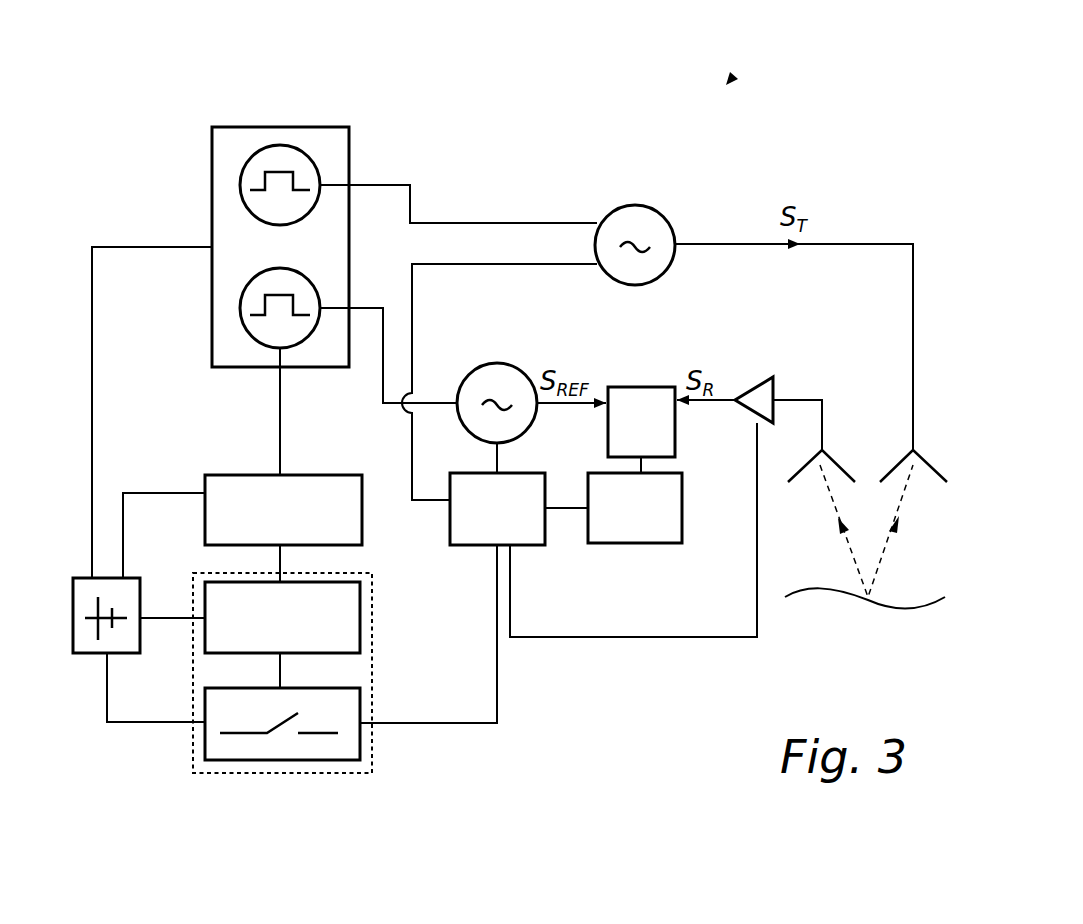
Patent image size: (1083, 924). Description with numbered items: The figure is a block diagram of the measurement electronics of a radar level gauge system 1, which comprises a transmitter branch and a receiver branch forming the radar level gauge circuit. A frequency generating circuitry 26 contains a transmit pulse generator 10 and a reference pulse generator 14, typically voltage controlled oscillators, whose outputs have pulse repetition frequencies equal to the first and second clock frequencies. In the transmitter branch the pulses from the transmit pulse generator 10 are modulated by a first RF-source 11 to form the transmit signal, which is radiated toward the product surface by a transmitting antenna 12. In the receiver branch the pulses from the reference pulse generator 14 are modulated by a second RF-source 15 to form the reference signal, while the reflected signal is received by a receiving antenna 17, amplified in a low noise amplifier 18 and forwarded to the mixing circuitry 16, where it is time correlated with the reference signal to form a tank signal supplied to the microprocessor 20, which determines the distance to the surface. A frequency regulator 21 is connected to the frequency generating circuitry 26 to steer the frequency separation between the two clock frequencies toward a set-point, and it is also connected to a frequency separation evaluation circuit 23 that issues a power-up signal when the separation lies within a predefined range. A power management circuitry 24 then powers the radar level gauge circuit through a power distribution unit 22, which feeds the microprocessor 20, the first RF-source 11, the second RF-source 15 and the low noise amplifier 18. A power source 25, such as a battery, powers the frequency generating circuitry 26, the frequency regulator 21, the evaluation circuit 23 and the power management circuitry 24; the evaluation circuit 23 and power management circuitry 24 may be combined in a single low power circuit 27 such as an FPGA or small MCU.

The level gauge system 1 is at (730, 80).
The transmit pulse generator 10 is at (278, 145).
The first RF-source 11 is at (637, 206).
The transmitting antenna 12 is at (918, 453).
The reference pulse generator 14 is at (270, 350).
The second RF-source 15 is at (500, 364).
The mixing circuitry 16 is at (638, 387).
The receiving antenna 17 is at (827, 453).
The low noise amplifier 18 is at (768, 380).
The microprocessor 20 is at (682, 530).
The frequency regulator 21 is at (312, 475).
The power distribution unit 22 is at (525, 545).
The frequency separation evaluation circuit 23 is at (360, 600).
The power management circuitry 24 is at (360, 705).
The power source 25 is at (130, 578).
The frequency generating circuitry 26 is at (350, 155).
The single low power circuit 27 is at (373, 767).